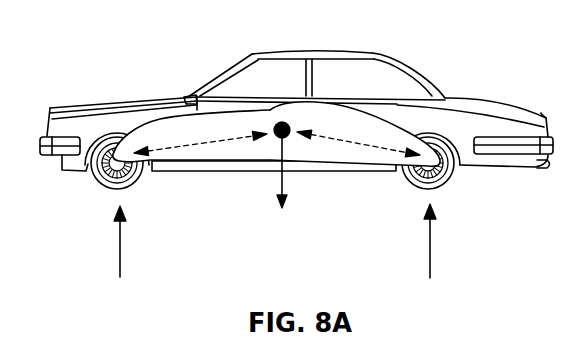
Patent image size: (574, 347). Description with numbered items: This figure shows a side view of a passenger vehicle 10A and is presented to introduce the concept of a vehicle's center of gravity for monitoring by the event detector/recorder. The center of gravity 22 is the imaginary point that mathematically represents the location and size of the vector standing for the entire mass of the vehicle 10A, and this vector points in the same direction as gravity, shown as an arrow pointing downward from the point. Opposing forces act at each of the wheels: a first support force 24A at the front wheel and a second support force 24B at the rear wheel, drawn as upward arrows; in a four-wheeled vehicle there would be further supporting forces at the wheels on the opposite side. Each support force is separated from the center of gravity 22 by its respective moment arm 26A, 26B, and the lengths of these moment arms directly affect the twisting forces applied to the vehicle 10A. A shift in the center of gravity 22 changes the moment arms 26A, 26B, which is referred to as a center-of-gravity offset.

The passenger vehicle 10A is at (432, 83).
The center of gravity 22 is at (266, 147).
The first support force 24A is at (118, 252).
The second support force 24B is at (432, 258).
The moment arm 26A is at (195, 147).
The moment arm 26B is at (360, 142).